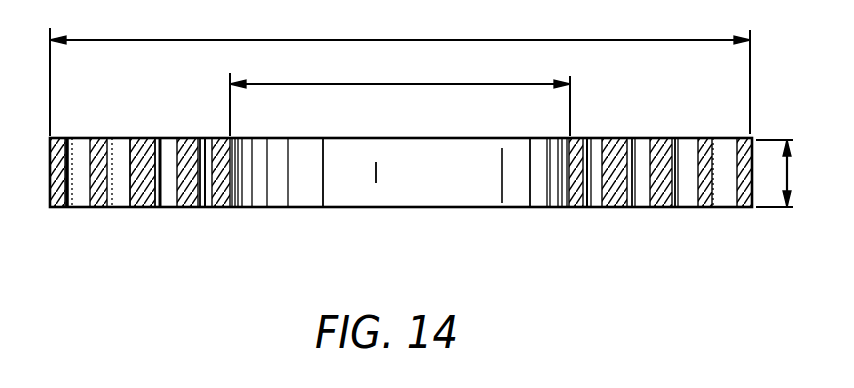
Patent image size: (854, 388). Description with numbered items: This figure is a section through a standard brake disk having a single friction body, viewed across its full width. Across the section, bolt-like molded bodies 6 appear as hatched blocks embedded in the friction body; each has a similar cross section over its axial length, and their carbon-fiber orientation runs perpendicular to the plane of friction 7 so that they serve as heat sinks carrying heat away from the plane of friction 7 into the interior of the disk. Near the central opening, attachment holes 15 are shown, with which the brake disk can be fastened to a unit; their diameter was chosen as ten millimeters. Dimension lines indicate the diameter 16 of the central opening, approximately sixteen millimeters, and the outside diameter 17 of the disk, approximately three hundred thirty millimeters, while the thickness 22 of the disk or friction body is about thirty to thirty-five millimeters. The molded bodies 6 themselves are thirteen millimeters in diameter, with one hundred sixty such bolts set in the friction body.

The molded bodies 6 is at (165, 197).
The plane of friction 7 is at (145, 138).
The attachment holes 15 is at (208, 197).
The diameter of the central opening 16 is at (400, 94).
The outside diameter 17 is at (400, 71).
The thickness 22 is at (794, 173).